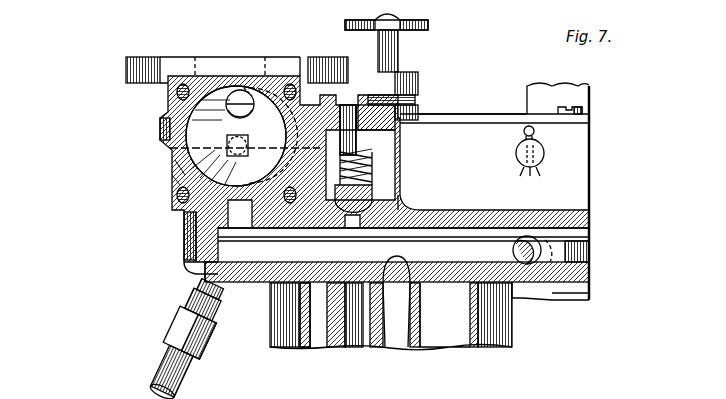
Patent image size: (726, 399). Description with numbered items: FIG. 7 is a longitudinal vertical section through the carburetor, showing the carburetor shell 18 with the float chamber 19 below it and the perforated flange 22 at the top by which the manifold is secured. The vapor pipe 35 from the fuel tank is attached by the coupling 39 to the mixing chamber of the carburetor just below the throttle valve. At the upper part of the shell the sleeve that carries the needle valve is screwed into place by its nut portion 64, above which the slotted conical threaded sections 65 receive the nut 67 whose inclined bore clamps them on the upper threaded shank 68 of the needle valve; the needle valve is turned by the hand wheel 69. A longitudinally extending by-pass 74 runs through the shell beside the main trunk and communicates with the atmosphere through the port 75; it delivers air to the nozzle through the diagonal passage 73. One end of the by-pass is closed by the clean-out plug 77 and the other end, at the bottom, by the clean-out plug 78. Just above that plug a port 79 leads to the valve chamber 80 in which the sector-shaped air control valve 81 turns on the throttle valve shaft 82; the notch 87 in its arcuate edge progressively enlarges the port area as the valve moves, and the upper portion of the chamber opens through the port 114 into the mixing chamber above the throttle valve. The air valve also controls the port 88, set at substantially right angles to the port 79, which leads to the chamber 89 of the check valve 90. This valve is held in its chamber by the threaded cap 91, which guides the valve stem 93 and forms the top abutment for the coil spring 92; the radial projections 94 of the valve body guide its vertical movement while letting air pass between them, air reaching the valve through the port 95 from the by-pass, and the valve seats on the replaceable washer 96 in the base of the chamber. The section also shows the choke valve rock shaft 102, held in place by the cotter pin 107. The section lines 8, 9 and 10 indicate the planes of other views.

The section line 8- 8 is at (92, 125).
The section line 9- 9 is at (105, 247).
The section line 10- 10 is at (252, 312).
The carburetor shell 18 is at (591, 228).
The float chamber 19 is at (304, 347).
The perforated flange 22 is at (142, 57).
The pipe 35 is at (168, 378).
The coupling 39 is at (192, 294).
The nut portion 64 is at (420, 116).
The conical threaded sections 65 is at (416, 100).
The nut 67 is at (414, 92).
The upper threaded shank 68 is at (398, 64).
The hand wheel 69 is at (405, 22).
The diagonal passage 73 is at (390, 347).
The by-pass 74 is at (474, 240).
The port 75 is at (522, 236).
The clean-out plug 77 is at (592, 258).
The clean-out plug 78 is at (182, 262).
The port 79 is at (226, 222).
The valve chamber 80 is at (170, 165).
The air control valve 81 is at (268, 75).
The throttle valve shaft 82 is at (165, 152).
The notch 87 is at (172, 200).
The port 88 is at (300, 200).
The chamber 89 is at (374, 166).
The check valve 90 is at (395, 195).
The threaded cap 91 is at (420, 110).
The coil spring 92 is at (380, 180).
The valve stem 93 is at (394, 134).
The radial projections 94 is at (402, 187).
The port 95 is at (353, 228).
The washer 96 is at (404, 202).
The shaft 102 is at (540, 160).
The cotter pin 107 is at (536, 172).
The port 114 is at (232, 90).